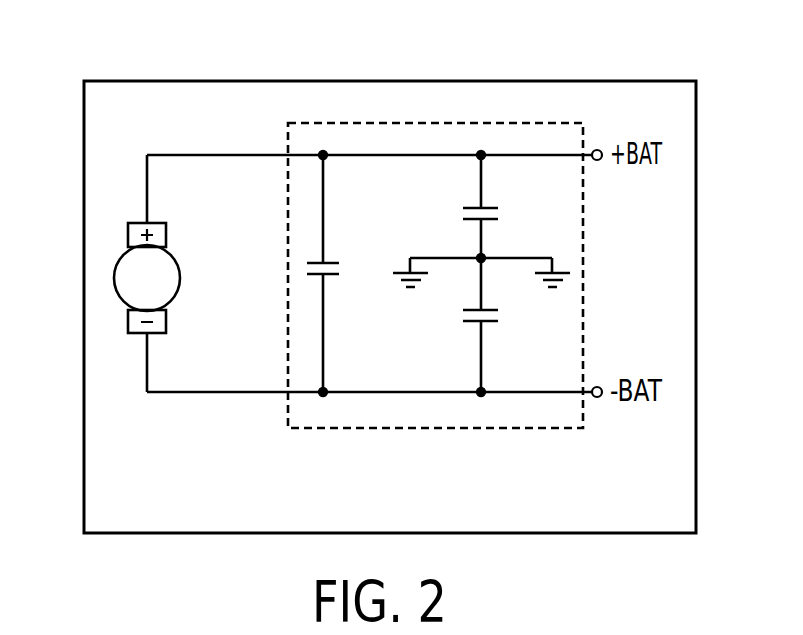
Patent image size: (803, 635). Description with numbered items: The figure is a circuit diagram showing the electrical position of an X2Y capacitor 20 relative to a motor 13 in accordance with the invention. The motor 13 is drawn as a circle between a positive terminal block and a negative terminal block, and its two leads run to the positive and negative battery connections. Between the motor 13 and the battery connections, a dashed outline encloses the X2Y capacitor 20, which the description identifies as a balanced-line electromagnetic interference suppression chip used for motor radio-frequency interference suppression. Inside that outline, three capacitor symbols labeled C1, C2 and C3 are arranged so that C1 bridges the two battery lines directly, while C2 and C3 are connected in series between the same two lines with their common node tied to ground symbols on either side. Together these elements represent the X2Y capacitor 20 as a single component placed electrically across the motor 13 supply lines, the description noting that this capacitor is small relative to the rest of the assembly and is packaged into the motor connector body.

The motor 13 is at (128, 316).
The X2Y capacitor 20 is at (423, 428).
The capacitor C1 is at (339, 273).
The capacitor C2 is at (499, 206).
The capacitor C3 is at (499, 325).